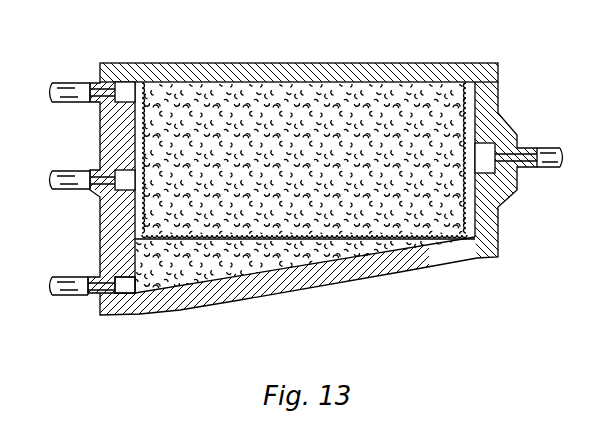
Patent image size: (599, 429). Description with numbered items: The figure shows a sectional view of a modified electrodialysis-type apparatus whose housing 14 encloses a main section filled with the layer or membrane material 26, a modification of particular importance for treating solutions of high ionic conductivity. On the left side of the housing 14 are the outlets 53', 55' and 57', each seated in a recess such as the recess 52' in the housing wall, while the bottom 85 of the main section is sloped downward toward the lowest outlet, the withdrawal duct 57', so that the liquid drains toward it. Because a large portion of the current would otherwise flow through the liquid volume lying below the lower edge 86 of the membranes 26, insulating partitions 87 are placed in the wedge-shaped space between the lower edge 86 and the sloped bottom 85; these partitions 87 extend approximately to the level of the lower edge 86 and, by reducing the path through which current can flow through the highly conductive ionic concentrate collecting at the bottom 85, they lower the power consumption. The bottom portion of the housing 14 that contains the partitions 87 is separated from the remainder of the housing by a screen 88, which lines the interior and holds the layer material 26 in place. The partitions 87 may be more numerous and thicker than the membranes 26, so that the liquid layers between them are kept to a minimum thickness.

The housing wall 14 is at (396, 63).
The membrane 26 is at (304, 159).
The bolt head recess 52' is at (132, 312).
The outlet 53' is at (83, 76).
The outlet 55' is at (83, 166).
The withdrawal duct 57' is at (83, 272).
The bottom 85 is at (372, 268).
The lower edge 86 is at (338, 236).
The insulating partitions 87 is at (230, 263).
The screen 88 is at (145, 95).